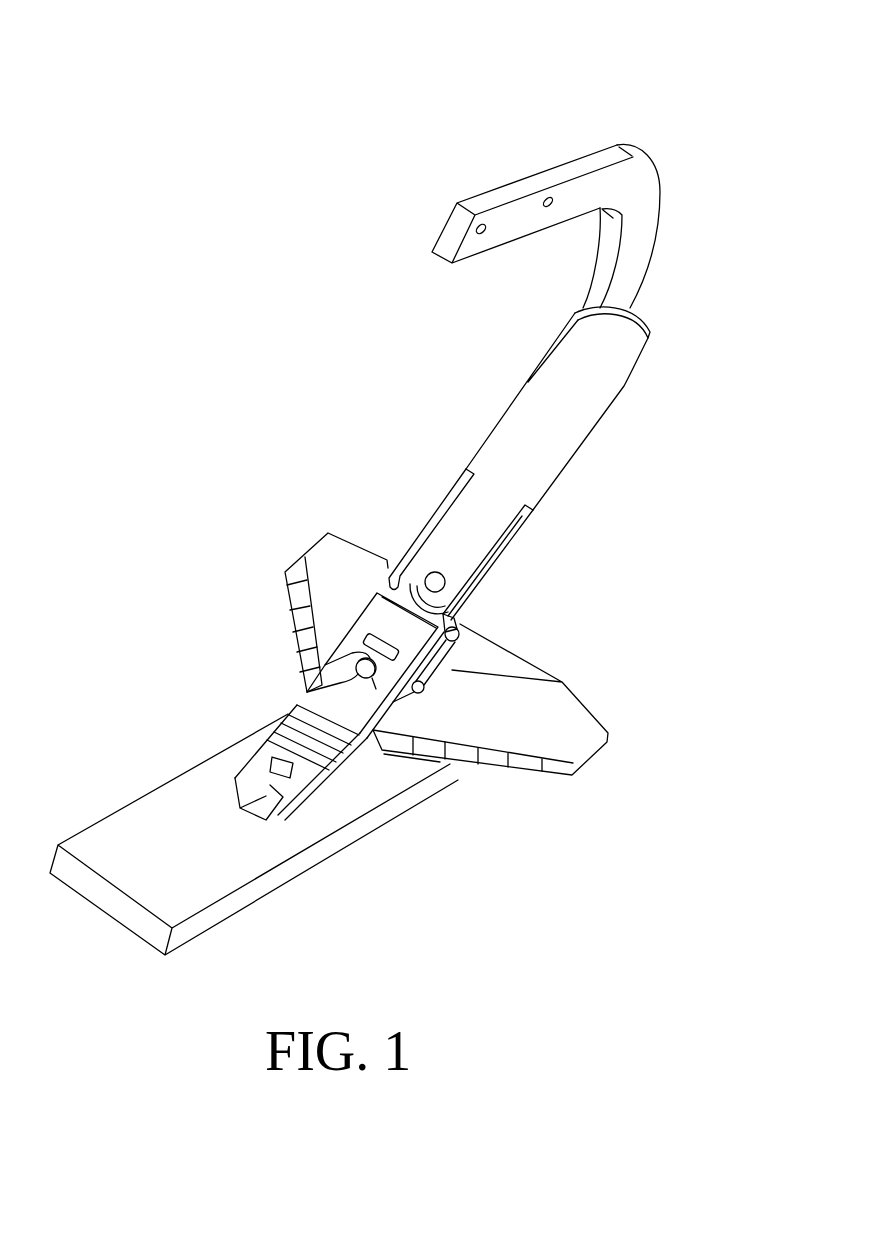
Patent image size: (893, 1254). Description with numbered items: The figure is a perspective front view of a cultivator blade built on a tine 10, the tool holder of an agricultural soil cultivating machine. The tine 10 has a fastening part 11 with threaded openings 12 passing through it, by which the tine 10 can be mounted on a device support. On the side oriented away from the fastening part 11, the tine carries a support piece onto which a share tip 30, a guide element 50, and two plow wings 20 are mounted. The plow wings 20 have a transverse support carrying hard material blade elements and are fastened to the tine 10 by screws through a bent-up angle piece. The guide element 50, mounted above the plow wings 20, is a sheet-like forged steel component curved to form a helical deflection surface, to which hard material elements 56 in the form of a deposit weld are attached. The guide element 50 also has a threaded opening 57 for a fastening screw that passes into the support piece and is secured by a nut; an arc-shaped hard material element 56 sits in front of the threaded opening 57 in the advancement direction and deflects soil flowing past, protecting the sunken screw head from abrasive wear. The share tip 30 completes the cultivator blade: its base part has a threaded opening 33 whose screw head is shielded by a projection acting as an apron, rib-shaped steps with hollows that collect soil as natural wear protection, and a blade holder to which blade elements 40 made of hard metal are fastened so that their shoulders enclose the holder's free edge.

The tine 10 is at (689, 182).
The fastening part 11 is at (555, 172).
The threaded openings 12 is at (484, 236).
The plow wings 20 is at (330, 560).
The share tip 30 is at (333, 762).
The threaded opening 33 is at (356, 667).
The blade elements 40 is at (273, 810).
The guide element 50 is at (611, 382).
The hard material elements 56 is at (452, 493).
The threaded opening 57 is at (447, 581).